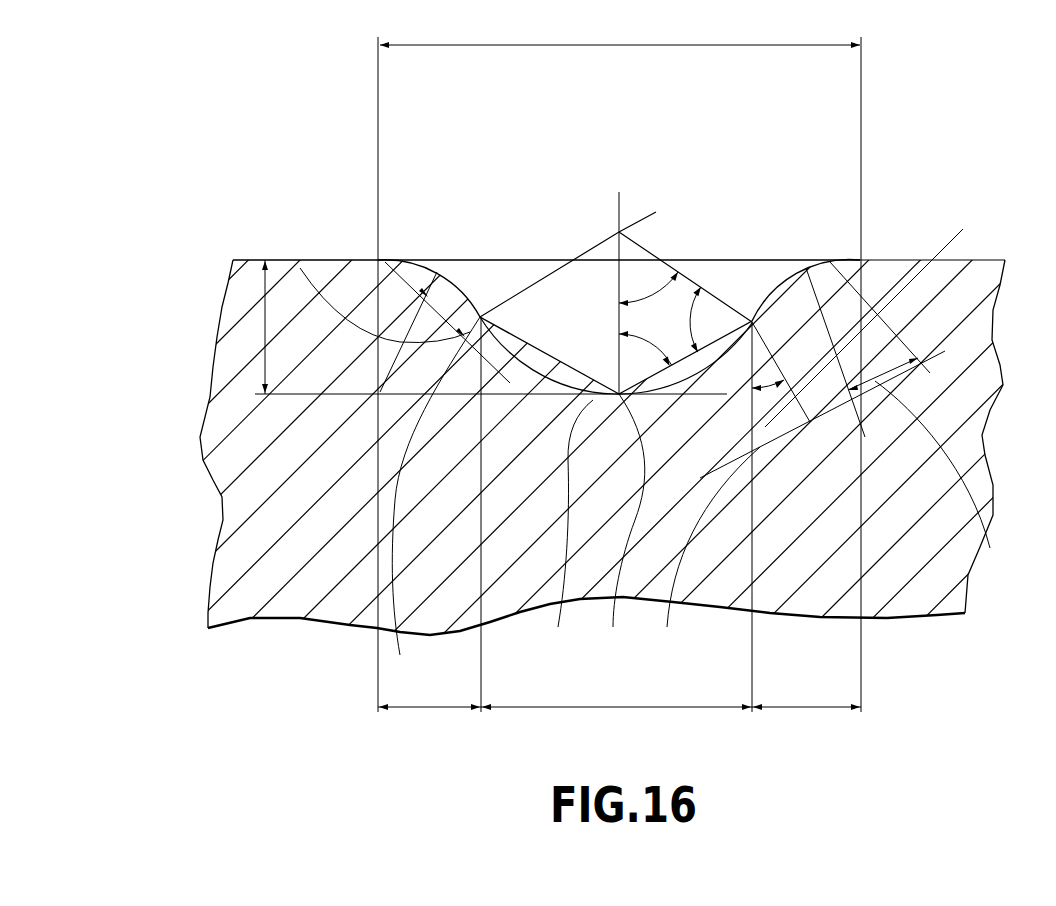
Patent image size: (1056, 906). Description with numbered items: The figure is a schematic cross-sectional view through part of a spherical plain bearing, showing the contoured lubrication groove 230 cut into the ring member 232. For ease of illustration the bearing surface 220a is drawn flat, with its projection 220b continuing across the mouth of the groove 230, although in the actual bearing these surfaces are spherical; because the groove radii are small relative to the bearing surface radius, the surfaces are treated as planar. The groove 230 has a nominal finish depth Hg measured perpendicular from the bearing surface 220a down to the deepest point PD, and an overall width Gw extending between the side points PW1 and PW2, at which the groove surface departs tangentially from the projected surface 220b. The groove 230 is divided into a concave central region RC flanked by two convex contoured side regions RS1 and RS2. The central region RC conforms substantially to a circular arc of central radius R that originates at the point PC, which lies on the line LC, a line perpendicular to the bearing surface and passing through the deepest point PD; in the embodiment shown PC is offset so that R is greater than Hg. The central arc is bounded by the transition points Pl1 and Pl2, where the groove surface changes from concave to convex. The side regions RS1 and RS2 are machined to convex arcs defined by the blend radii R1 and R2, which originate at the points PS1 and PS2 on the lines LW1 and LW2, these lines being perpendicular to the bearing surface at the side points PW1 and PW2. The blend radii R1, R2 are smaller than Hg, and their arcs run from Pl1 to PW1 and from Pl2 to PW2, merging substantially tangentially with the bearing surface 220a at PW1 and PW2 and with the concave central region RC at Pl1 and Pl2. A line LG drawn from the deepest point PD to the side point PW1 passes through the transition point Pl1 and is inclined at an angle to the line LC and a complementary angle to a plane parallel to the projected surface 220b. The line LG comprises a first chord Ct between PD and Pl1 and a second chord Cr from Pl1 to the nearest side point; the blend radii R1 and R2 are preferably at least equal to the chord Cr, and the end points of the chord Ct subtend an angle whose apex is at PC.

The ring member 232 is at (268, 258).
The bearing surface 220a is at (269, 258).
The projection of the bearing surface 220b is at (418, 262).
The groove 230 is at (525, 297).
The overall width Gw is at (636, 44).
The line LW1 is at (866, 122).
The line LW2 is at (376, 684).
The nominal finish depth Hg is at (264, 327).
The line LC is at (617, 212).
The point PC is at (640, 227).
The central circular radius R is at (565, 300).
The point PS1 is at (886, 322).
The point PS2 is at (300, 288).
The side point PW1 is at (858, 258).
The side point PW2 is at (381, 257).
The transition point Pi1 Pl1 is at (751, 320).
The transition point Pi2 Pl2 is at (436, 514).
The blend radius R1 is at (848, 378).
The blend radius R2 is at (377, 388).
The second chord Cr is at (978, 440).
The first chord Ct is at (801, 508).
The deepest point PD is at (569, 529).
The line LG is at (621, 526).
The side region RS1 is at (803, 708).
The side region RS2 is at (430, 712).
The central region RC is at (596, 712).